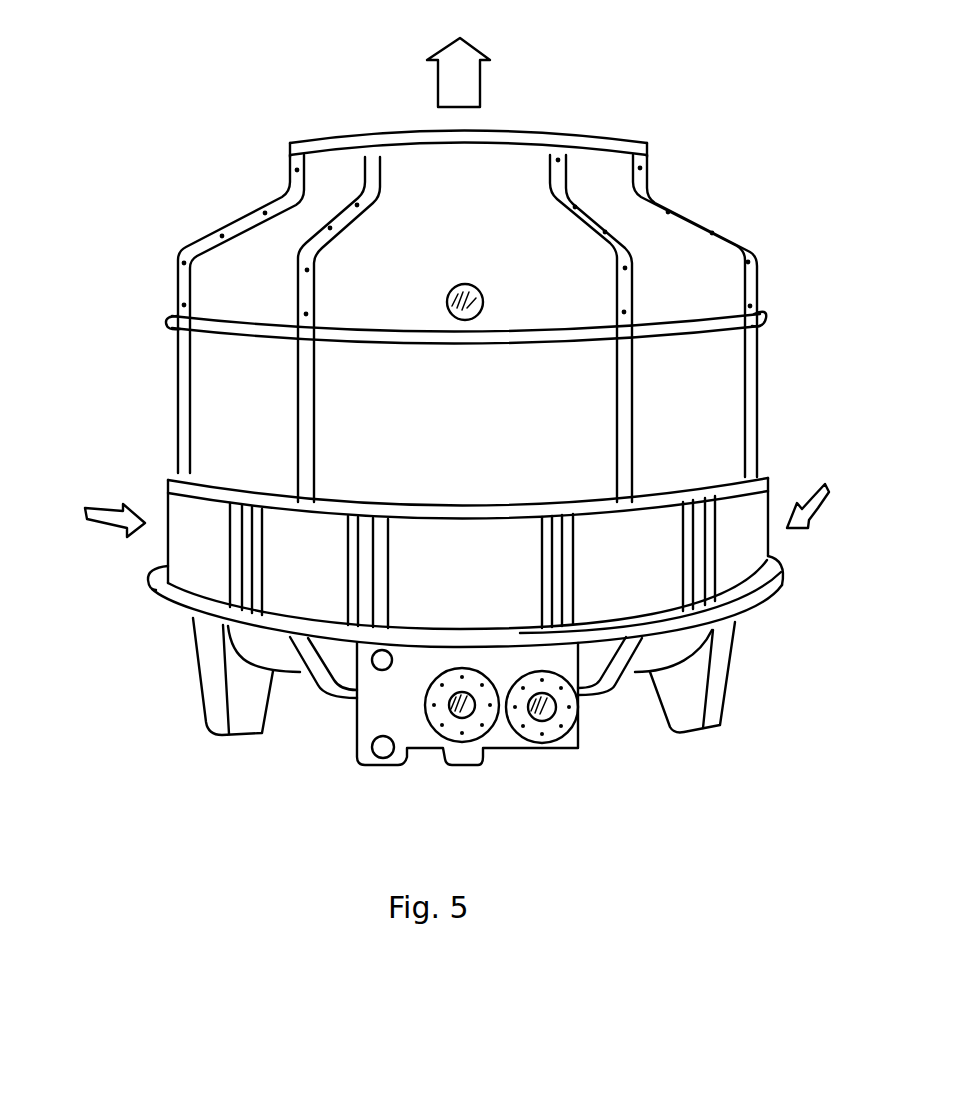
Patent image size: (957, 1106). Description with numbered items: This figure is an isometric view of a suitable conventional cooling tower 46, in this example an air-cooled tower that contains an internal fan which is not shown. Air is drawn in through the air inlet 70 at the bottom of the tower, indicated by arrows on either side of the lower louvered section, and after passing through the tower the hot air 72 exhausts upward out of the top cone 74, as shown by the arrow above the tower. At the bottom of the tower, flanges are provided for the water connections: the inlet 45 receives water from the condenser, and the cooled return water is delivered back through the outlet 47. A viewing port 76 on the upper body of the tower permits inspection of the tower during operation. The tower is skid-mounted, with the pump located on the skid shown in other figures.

The inlet 45 is at (473, 712).
The cooling tower 46 is at (782, 377).
The cooled return water outlet 47 is at (550, 713).
The air inlet 70 is at (459, 503).
The hot air 72 is at (490, 88).
The top cone 74 is at (607, 185).
The viewing port 76 is at (483, 300).